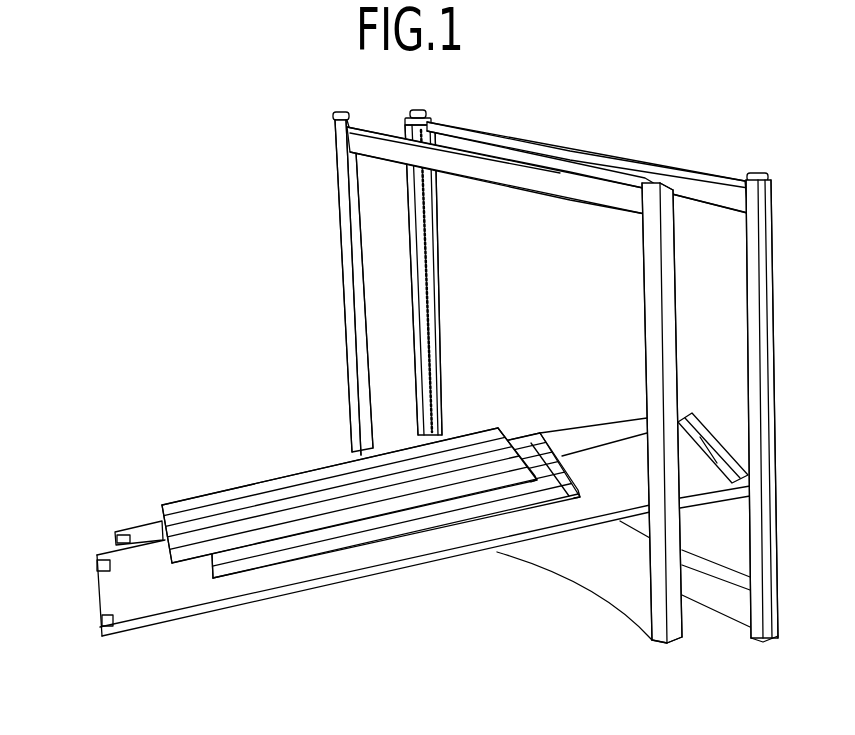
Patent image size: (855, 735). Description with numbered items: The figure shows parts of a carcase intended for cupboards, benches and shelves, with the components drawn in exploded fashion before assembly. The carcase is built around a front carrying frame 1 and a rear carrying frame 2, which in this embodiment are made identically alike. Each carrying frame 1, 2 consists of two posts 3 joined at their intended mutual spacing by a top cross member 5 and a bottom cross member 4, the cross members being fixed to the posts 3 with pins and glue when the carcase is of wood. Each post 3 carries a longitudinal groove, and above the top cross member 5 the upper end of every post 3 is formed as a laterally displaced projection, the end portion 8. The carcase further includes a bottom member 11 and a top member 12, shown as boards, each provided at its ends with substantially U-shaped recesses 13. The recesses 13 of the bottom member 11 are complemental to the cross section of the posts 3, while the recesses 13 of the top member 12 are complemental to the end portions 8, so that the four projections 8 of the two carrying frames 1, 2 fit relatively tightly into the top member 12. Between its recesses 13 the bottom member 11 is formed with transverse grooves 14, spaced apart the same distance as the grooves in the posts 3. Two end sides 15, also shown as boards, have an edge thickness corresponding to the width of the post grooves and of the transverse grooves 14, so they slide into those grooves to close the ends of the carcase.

The front carrying frame 1 is at (330, 258).
The rear carrying frame 2 is at (448, 278).
The posts 3 is at (347, 377).
The bottom cross member 4 is at (725, 603).
The top cross member 5 is at (595, 192).
The end portion (projection) 8 is at (333, 116).
The bottom member 11 is at (140, 530).
The top member 12 is at (150, 610).
The U-shaped recesses 13 is at (97, 557).
The transverse grooves 14 is at (703, 434).
The end sides 15 is at (214, 497).